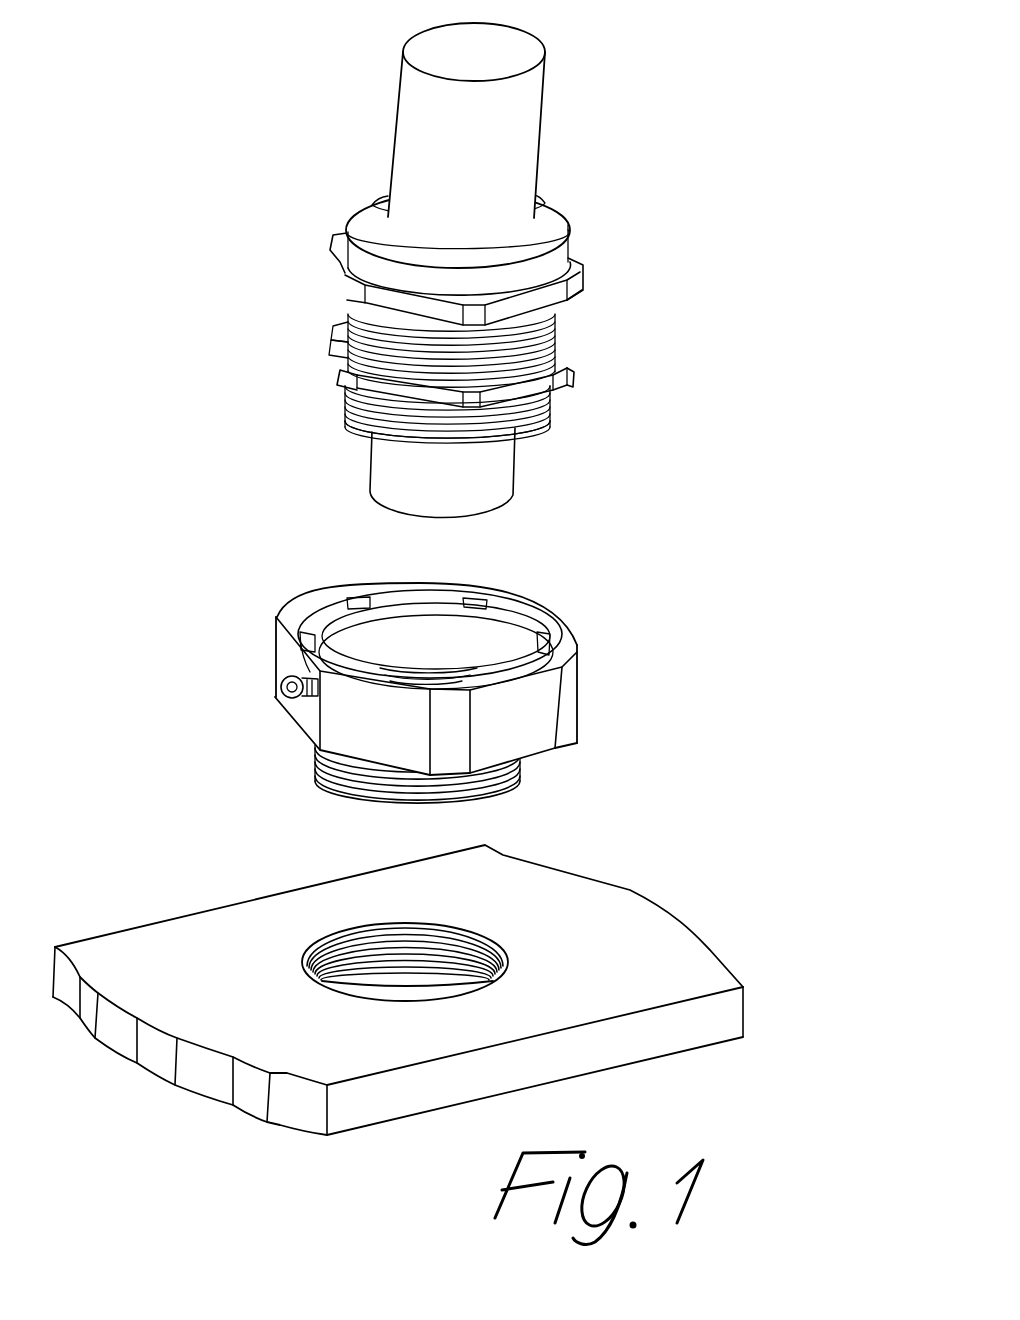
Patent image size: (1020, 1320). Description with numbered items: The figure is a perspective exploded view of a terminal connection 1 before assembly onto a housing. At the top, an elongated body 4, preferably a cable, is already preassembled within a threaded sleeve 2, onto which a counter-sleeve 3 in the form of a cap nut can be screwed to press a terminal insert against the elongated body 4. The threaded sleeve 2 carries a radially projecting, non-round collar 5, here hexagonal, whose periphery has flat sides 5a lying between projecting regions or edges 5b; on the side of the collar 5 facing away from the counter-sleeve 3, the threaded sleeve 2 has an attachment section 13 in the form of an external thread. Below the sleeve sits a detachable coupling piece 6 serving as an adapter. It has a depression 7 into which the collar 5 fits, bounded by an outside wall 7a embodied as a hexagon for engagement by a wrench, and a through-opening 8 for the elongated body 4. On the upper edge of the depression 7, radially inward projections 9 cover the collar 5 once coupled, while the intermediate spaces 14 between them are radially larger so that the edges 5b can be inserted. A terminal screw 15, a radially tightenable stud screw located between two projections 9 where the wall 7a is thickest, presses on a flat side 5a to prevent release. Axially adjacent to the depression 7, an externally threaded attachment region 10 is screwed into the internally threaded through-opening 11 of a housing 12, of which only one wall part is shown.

The terminal connection 1 is at (272, 205).
The threaded sleeve 2 is at (562, 333).
The counter-sleeve 3 is at (553, 245).
The elongated body 4 is at (525, 118).
The collar 5 is at (563, 362).
The flat side 5a is at (340, 354).
The projecting regions or edges 5b is at (333, 328).
The coupling piece 6 is at (592, 650).
The depression 7 is at (465, 652).
The outside wall 7a is at (292, 650).
The through-opening 8 is at (416, 668).
The projections 9 is at (360, 603).
The attachment region 10 is at (523, 760).
The through-opening 11 is at (402, 990).
The housing 12 is at (667, 940).
The attachment section 13 is at (545, 410).
The intermediate spaces 14 is at (313, 613).
The terminal screw 15 is at (302, 703).